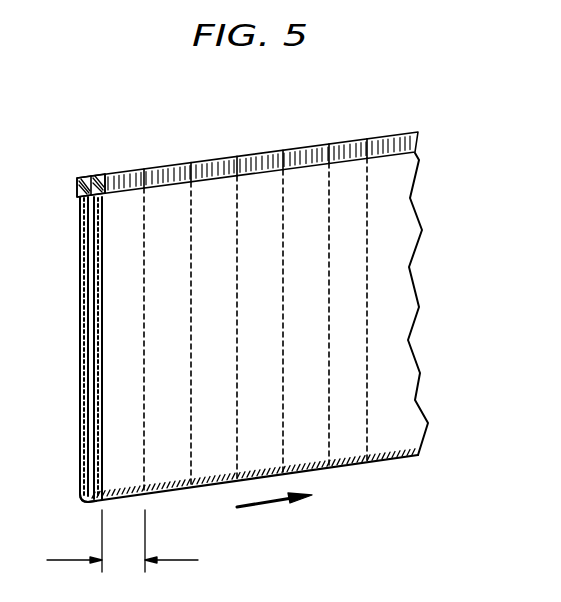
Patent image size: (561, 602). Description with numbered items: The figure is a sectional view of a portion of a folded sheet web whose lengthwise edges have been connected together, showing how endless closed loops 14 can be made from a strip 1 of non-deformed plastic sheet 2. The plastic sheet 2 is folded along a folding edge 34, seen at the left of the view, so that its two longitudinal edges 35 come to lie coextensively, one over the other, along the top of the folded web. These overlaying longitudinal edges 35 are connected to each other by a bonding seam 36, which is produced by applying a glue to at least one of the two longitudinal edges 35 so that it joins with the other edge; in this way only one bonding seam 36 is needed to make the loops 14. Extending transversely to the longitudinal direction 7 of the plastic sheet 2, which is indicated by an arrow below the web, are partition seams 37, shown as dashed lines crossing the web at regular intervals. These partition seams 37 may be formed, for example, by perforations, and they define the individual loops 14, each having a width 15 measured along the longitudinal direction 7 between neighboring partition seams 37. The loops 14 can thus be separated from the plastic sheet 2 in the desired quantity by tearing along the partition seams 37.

The strip 1 is at (82, 248).
The plastic sheet 2 is at (396, 160).
The longitudinal direction 7 is at (272, 500).
The loop 14 is at (82, 383).
The width 15 is at (122, 542).
The folding edge 34 is at (85, 503).
The longitudinal edges 35 is at (124, 178).
The bonding seam 36 is at (91, 178).
The partition seams 37 is at (330, 450).